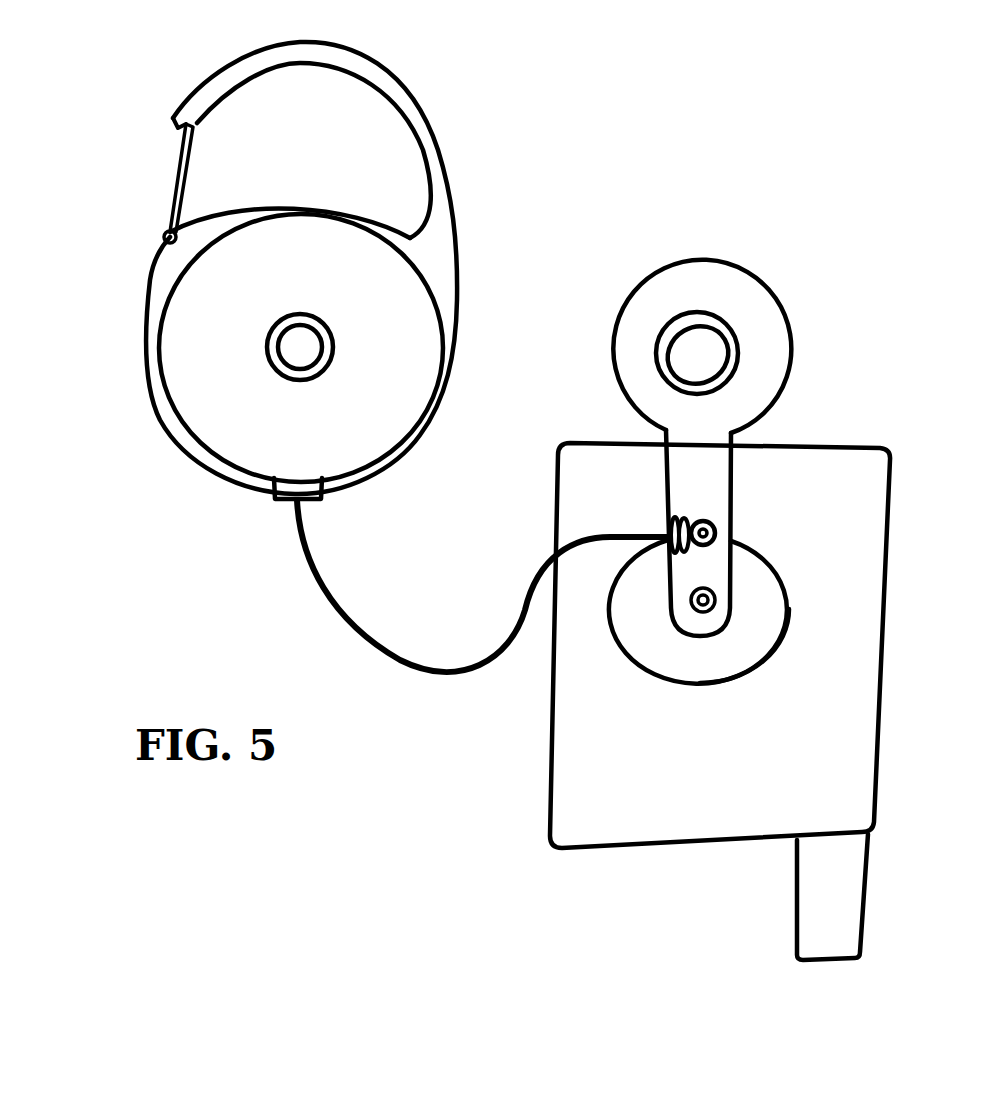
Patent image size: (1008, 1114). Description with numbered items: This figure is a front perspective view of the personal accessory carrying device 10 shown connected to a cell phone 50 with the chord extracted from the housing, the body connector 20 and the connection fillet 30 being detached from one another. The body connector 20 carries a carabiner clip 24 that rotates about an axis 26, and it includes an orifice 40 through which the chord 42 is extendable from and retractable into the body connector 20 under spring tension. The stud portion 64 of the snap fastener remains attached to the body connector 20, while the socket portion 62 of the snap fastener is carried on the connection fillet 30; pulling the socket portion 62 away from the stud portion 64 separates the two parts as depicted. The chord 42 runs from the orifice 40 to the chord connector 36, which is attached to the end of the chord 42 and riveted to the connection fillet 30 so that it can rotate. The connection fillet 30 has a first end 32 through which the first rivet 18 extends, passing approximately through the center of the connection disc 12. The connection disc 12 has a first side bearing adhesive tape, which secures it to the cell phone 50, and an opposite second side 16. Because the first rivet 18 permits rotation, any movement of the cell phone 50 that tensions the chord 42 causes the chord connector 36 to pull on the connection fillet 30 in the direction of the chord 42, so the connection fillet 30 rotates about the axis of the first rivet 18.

The personal accessory carrying device 10 is at (183, 70).
The connection disc 12 is at (768, 592).
The second side 16 is at (760, 628).
The first rivet 18 is at (715, 592).
The body connector 20 is at (423, 127).
The carabiner clip 24 is at (174, 165).
The axis 26 is at (162, 234).
The connection fillet 30 is at (710, 458).
The first end 32 is at (690, 618).
The chord connector 36 is at (716, 532).
The orifice 40 is at (272, 500).
The chord 42 is at (318, 572).
The cell phone 50 is at (565, 752).
The socket portion 62 is at (717, 333).
The stud portion 64 is at (310, 345).